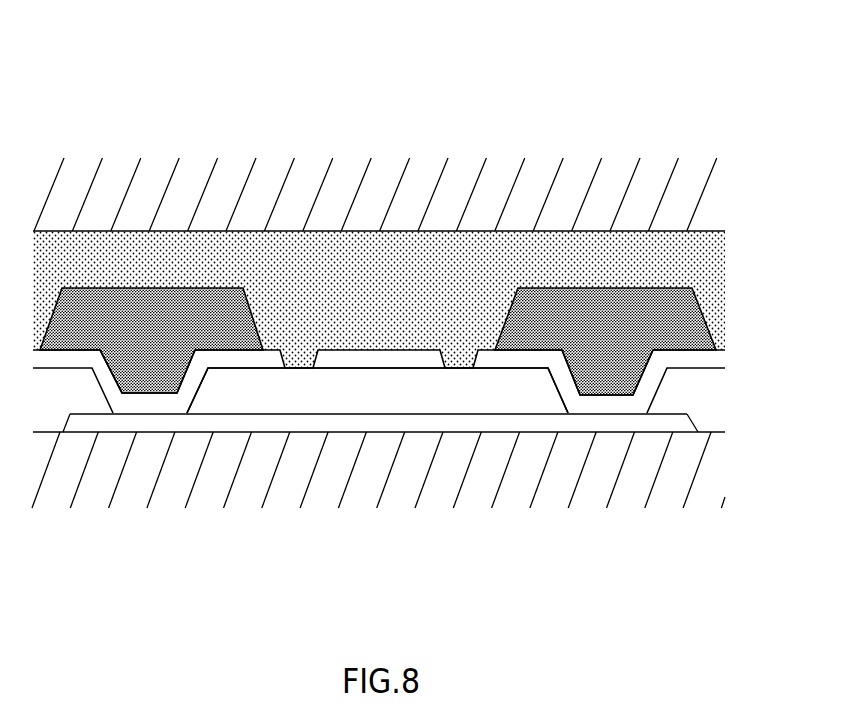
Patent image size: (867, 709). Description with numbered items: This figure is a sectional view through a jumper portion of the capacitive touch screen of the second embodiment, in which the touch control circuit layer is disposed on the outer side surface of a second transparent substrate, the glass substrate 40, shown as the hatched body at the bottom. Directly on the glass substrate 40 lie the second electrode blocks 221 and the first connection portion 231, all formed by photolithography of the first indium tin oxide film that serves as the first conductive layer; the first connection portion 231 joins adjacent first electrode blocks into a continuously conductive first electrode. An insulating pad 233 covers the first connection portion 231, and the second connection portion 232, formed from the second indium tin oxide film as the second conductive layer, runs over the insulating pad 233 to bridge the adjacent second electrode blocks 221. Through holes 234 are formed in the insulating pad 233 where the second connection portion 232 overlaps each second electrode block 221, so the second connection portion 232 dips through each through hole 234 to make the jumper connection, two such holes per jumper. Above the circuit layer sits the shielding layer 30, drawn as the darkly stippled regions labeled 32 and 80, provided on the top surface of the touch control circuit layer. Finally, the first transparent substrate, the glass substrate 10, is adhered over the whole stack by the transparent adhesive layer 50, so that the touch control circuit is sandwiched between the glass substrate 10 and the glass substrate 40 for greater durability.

The glass substrate 10 is at (375, 125).
The transparent adhesive layer 50 is at (379, 194).
The dark electrode layer 32 is at (379, 197).
The shielding layer 30 is at (148, 224).
The second electrode 80 is at (599, 197).
The through hole 234 is at (349, 225).
The first connection portion 231 is at (396, 482).
The second connection portion 232 is at (379, 497).
The insulating pad 233 is at (377, 480).
The second electrode block 221 is at (379, 498).
The glass substrate 40 is at (378, 494).